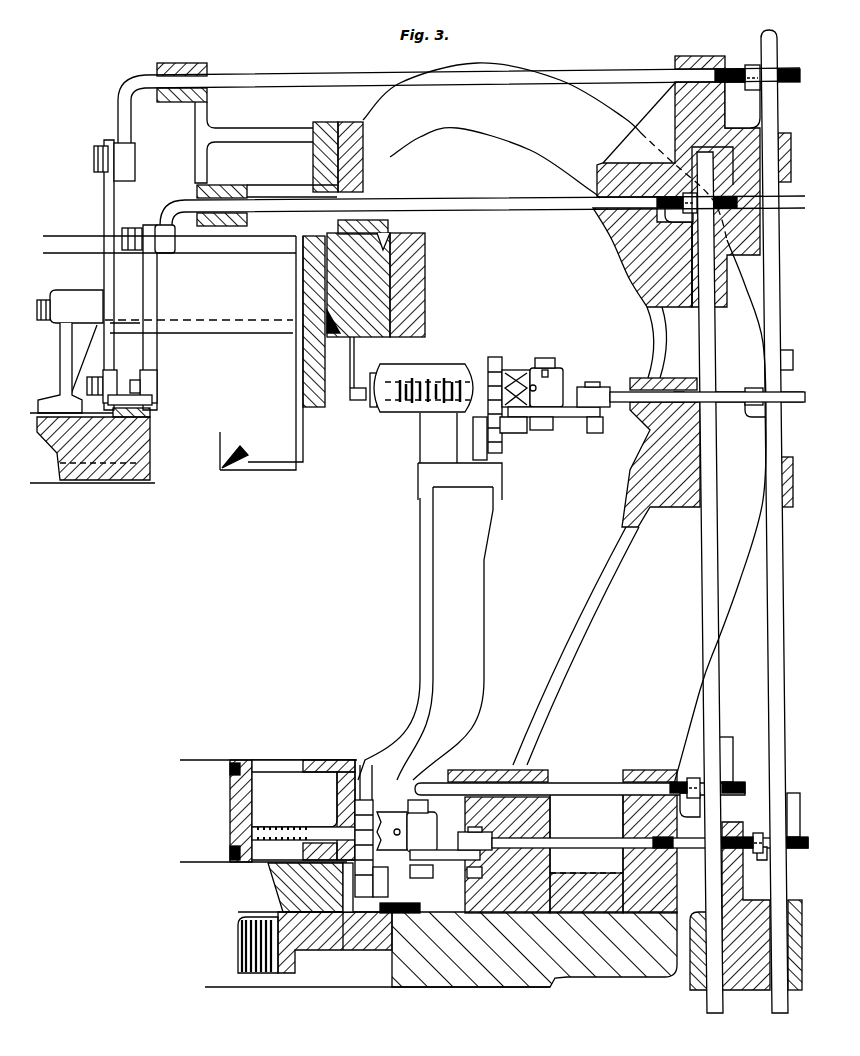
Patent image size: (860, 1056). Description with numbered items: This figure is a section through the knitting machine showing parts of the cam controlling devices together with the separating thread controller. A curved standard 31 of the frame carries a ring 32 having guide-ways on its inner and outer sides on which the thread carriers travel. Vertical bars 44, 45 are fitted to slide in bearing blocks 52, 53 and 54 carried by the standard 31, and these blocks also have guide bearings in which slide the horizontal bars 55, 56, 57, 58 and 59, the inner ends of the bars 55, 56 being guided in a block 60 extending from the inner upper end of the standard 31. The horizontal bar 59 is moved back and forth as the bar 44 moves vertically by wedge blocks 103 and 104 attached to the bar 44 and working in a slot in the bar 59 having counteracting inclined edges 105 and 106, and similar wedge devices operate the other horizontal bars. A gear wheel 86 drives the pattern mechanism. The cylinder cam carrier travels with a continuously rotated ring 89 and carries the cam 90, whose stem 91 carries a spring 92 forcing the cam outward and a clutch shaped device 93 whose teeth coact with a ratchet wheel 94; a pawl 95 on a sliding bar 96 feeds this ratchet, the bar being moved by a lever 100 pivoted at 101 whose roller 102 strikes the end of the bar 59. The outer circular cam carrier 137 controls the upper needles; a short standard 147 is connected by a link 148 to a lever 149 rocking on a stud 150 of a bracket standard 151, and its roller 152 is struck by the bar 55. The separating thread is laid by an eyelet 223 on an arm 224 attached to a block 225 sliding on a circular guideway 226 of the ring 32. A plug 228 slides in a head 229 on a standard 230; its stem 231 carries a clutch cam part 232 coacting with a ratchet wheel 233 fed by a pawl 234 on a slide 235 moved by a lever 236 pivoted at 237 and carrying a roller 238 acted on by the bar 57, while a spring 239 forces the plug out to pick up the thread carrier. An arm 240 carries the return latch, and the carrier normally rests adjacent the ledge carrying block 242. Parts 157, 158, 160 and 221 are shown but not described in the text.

The standard 31 is at (575, 626).
The ring 32 is at (395, 240).
The bar 44 is at (775, 632).
The bar 45 is at (713, 667).
The bearing block 52 is at (787, 153).
The bearing block 53 is at (792, 490).
The bearing block 54 is at (537, 772).
The horizontal bar 55 is at (125, 82).
The horizontal bar 56 is at (170, 212).
The horizontal bar 57 is at (618, 402).
The horizontal bar 58 is at (578, 785).
The horizontal bar 59 is at (577, 840).
The block 60 is at (205, 133).
The gear wheel 86 is at (633, 963).
The ring 89 is at (283, 892).
The cam 90 is at (230, 798).
The stem 91 is at (260, 832).
The spring 92 is at (278, 822).
The clutch shaped device 93 is at (393, 818).
The ratchet wheel 94 is at (358, 760).
The pawl 95 is at (375, 887).
The bar 96 is at (343, 950).
The lever 100 is at (455, 863).
The pivot 101 is at (446, 878).
The roller 102 is at (440, 845).
The wedge block 103 is at (748, 65).
The wedge block 104 is at (780, 43).
The inclined edge 105 is at (747, 87).
The inclined edge 106 is at (773, 70).
The outer circular cam carrier 137 is at (103, 472).
The short standard 147 is at (112, 385).
The link 148 is at (88, 384).
The lever 149 is at (92, 160).
The stud 150 is at (38, 298).
The bracket standard 151 is at (72, 295).
The roller 152 is at (131, 164).
The bar 157 is at (150, 400).
The block 158 is at (160, 378).
The block 160 is at (173, 252).
The stop 221 is at (352, 400).
The eyelet 223 is at (247, 456).
The arm 224 is at (305, 432).
The block 225 is at (318, 365).
The circular guideway 226 is at (270, 312).
The plug 228 is at (374, 410).
The head 229 is at (427, 417).
The standard 230 is at (473, 573).
The stem 231 is at (560, 376).
The clutch shaped cam part 232 is at (515, 372).
The ratchet wheel 233 is at (497, 358).
The pawl 234 is at (505, 431).
The slide 235 is at (485, 445).
The lever 236 is at (545, 422).
The pivot 237 is at (550, 432).
The roller 238 is at (590, 388).
The spring 239 is at (430, 370).
The arm 240 is at (358, 378).
The ledge carrying block 242 is at (410, 292).